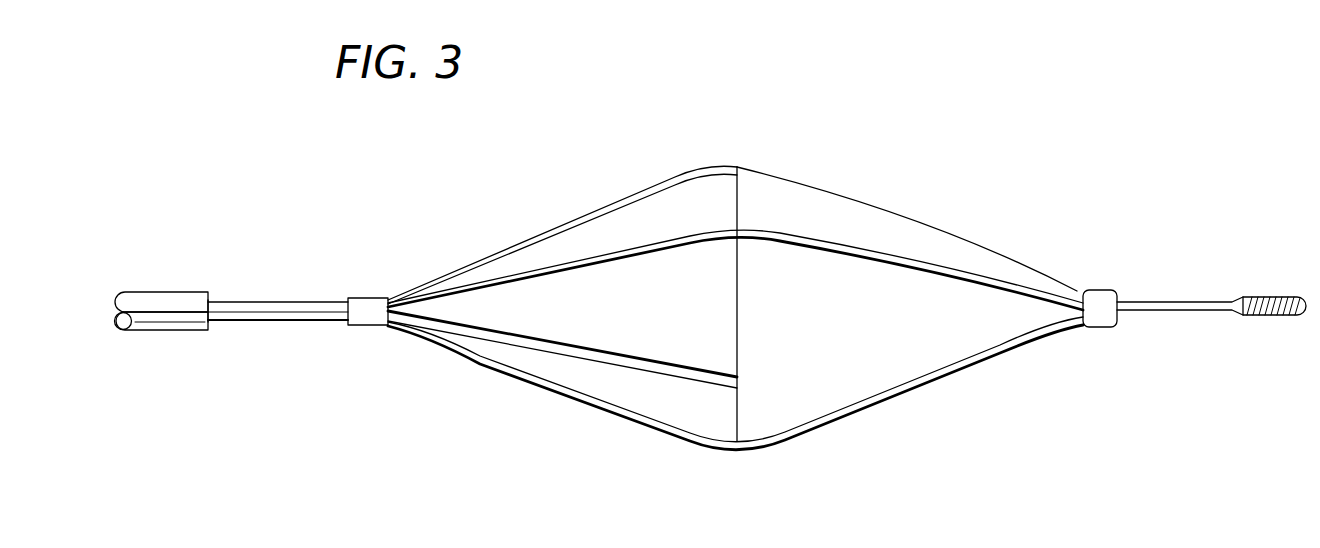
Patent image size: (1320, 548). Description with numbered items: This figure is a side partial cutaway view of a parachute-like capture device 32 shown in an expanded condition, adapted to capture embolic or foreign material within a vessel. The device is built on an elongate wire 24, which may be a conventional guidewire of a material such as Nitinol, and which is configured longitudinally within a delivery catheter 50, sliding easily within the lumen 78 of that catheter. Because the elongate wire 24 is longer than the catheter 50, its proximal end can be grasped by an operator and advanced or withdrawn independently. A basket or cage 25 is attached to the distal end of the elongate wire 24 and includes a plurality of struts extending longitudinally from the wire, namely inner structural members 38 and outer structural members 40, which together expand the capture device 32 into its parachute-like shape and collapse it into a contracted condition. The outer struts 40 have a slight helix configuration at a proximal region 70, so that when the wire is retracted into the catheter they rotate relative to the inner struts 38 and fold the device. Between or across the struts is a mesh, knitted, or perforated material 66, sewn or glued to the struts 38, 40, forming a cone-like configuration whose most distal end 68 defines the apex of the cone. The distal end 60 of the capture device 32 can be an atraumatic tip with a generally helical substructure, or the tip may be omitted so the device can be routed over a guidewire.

The delivery catheter 50 is at (165, 292).
The lumen 78 is at (212, 297).
The elongate wire 24 is at (293, 302).
The basket or cage 25 is at (453, 268).
The inner structural members 38 is at (590, 220).
The proximal region 70 is at (562, 268).
The mesh, knitted, or perforated material 66 is at (767, 208).
The parachute-like capture device 32 is at (892, 137).
The outer structural members 40 is at (930, 265).
The most distal end 68 is at (1037, 277).
The distal end 60 is at (1172, 300).